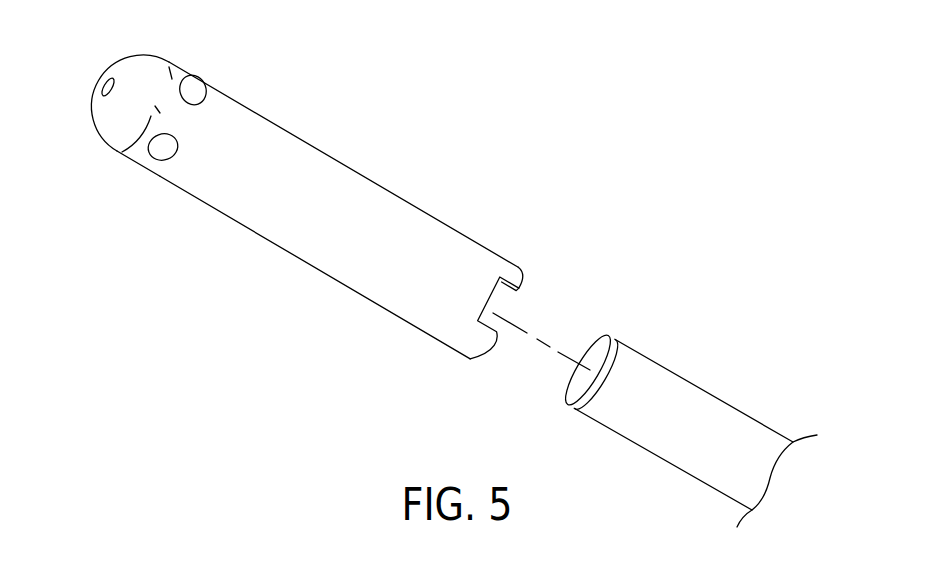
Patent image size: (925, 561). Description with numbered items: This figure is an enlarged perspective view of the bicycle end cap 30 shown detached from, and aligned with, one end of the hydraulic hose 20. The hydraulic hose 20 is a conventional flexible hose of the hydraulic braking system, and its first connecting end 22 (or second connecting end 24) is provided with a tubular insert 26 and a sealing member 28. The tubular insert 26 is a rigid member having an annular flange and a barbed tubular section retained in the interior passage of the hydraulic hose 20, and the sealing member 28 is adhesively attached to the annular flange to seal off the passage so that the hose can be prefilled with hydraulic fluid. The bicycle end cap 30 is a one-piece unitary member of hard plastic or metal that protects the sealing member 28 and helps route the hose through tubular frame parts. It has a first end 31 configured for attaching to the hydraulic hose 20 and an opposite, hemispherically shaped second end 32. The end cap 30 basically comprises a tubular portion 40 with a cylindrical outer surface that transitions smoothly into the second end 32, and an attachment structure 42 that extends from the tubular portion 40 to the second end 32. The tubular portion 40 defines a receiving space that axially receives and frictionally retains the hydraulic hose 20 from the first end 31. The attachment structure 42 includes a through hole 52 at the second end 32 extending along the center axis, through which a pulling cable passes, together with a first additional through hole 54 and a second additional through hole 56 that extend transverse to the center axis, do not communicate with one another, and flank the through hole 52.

The hydraulic hose 20 is at (693, 404).
The first connecting end 22 is at (702, 388).
The second connecting end 24 is at (695, 424).
The tubular insert 26 is at (625, 345).
The sealing member 28 is at (597, 345).
The bicycle end cap 30 is at (378, 185).
The first end 31 is at (527, 283).
The second end 32 is at (127, 60).
The tubular portion 40 is at (158, 162).
The attachment structure 42 is at (128, 158).
The through hole 52 is at (104, 83).
The first additional through hole 54 is at (193, 90).
The second additional through hole 56 is at (162, 152).